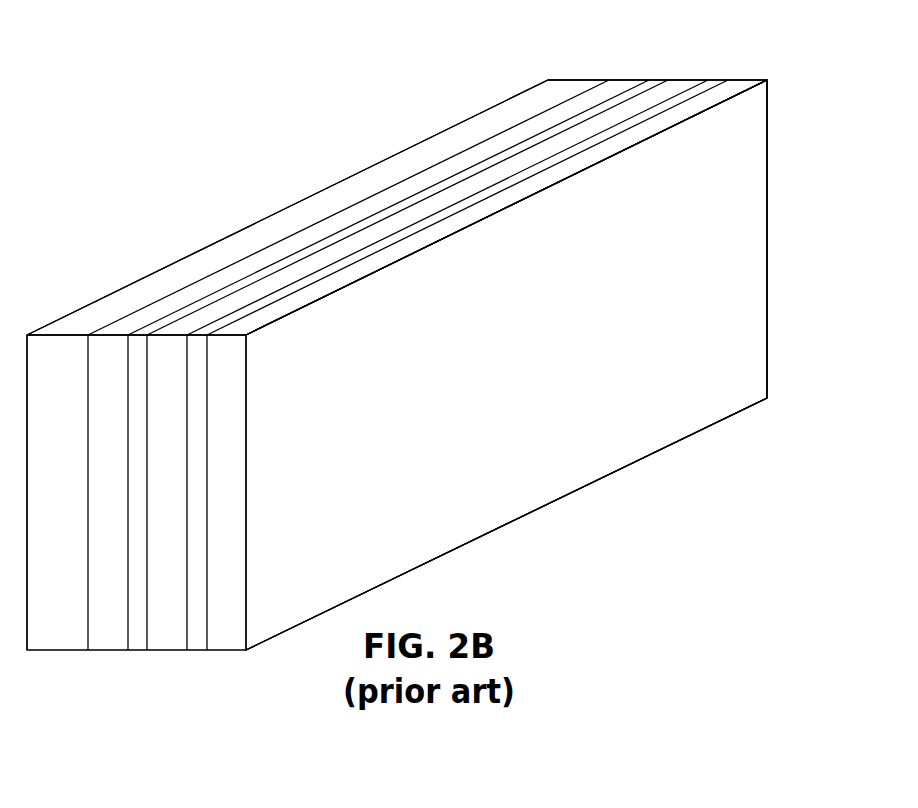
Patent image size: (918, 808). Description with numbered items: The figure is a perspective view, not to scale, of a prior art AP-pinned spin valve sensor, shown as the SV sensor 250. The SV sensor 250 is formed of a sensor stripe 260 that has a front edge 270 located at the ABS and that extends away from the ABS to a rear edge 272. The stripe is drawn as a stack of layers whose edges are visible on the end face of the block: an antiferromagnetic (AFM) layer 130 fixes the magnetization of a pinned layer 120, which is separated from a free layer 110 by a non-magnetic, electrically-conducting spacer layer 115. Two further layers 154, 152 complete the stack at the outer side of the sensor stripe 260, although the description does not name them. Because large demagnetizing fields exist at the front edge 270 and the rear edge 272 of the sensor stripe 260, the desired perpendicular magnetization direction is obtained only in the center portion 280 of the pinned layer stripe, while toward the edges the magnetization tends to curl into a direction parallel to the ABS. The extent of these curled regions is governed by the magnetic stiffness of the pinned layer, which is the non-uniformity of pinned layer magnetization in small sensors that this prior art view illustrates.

The SV sensor 250 is at (620, 562).
The antiferromagnetic (AFM) layer 130 is at (567, 88).
The pinned layer 120 is at (619, 82).
The spacer layer 115 is at (645, 80).
The free layer 110 is at (678, 80).
The layer 154 is at (708, 82).
The layer 152 is at (735, 92).
The sensor stripe 260 is at (767, 183).
The front edge 270 is at (420, 250).
The rear edge 272 is at (538, 507).
The center portion 280 is at (542, 353).
The air bearing surface ABS is at (384, 186).